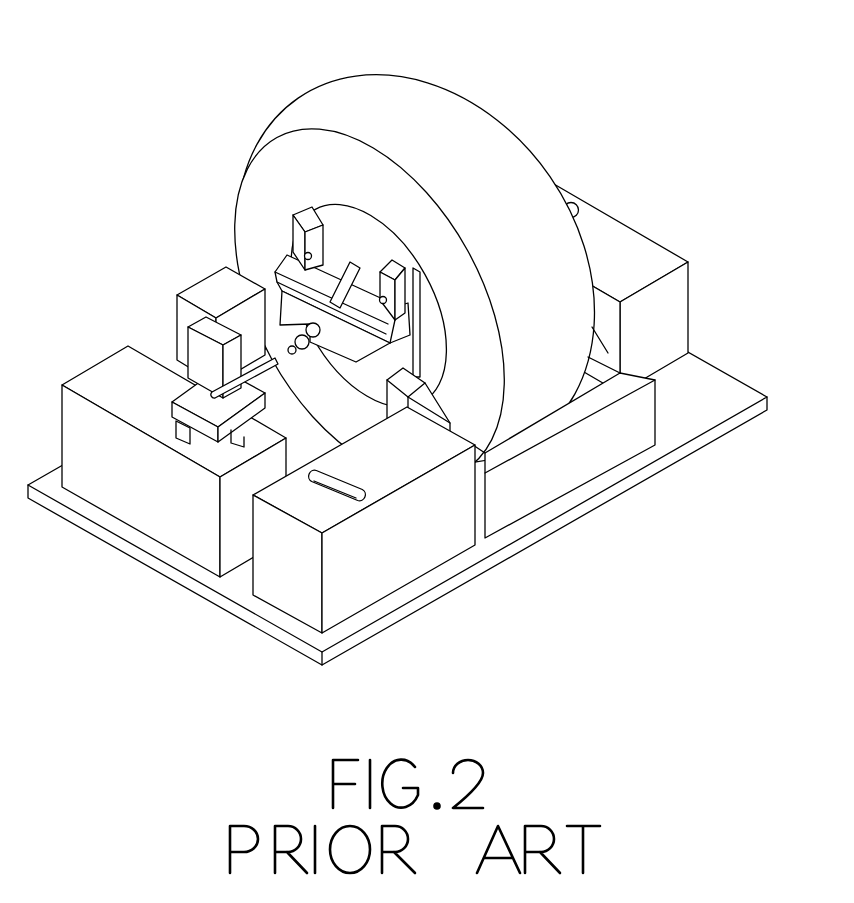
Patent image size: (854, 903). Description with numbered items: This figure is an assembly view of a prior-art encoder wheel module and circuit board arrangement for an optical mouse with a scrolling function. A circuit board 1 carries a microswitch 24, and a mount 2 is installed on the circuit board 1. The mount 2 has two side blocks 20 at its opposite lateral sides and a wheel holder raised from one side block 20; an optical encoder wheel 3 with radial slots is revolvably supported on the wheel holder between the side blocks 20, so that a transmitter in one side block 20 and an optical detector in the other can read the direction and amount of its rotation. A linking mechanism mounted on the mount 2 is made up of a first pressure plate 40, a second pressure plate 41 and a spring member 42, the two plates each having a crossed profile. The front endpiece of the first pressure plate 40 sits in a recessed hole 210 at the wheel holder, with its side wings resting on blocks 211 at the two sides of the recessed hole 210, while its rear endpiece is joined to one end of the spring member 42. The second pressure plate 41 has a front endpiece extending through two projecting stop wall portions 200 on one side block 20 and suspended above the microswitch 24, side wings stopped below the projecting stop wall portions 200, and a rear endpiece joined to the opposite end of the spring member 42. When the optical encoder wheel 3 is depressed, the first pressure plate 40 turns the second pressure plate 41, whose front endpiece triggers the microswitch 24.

The circuit board 1 is at (715, 402).
The mount 2 is at (610, 443).
The optical encoder wheel 3 is at (401, 100).
The side block 20 is at (200, 357).
The microswitch 24 is at (177, 422).
The first pressure plate 40 is at (288, 258).
The second pressure plate 41 is at (215, 413).
The spring member 42 is at (270, 292).
The projecting stop wall portions 200 is at (240, 294).
The recessed hole 210 is at (336, 252).
The blocks 211 is at (303, 216).